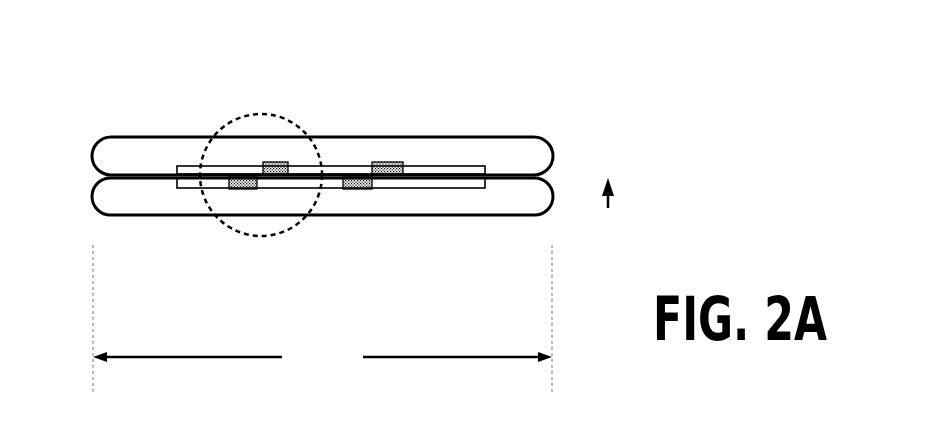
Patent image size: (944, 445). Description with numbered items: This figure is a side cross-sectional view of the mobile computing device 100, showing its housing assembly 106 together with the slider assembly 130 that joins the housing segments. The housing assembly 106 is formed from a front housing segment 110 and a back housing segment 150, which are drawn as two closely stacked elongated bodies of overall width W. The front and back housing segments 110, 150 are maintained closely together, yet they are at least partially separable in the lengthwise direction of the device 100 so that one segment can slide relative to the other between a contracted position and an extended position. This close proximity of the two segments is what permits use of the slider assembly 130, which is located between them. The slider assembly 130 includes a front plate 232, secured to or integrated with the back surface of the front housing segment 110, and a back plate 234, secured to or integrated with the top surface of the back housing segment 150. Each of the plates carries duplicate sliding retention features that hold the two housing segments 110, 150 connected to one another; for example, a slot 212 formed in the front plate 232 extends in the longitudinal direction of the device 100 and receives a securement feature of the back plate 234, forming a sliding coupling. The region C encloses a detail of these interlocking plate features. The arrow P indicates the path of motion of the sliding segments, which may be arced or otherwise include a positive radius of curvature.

The mobile computing device 100 is at (421, 113).
The housing assembly 106 is at (95, 138).
The front housing segment 110 is at (526, 128).
The slider assembly 130 is at (170, 190).
The back housing segment 150 is at (549, 200).
The slot 212 is at (170, 137).
The front plate 232 is at (340, 166).
The back plate 234 is at (412, 183).
The detail region C is at (239, 115).
The path of motion P is at (608, 174).
The width W is at (322, 319).